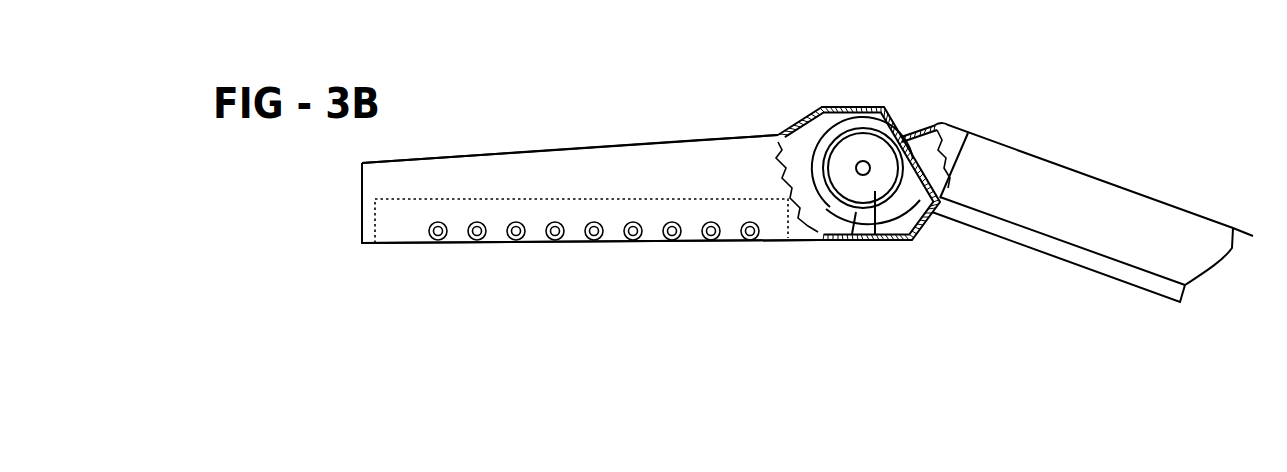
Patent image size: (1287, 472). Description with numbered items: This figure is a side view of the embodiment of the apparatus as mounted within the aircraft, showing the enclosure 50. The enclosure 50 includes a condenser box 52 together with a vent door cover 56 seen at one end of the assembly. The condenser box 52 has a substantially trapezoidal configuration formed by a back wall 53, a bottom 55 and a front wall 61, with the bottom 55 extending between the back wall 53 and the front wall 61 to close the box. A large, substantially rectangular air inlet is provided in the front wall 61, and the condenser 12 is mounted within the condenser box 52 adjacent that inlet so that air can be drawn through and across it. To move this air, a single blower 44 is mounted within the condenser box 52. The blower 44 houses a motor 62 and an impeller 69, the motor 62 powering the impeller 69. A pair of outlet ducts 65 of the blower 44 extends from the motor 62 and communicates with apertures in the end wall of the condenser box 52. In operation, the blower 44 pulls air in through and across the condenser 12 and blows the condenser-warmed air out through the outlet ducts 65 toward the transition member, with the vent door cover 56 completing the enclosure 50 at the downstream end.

The condenser 12 is at (585, 208).
The blower 44 is at (853, 236).
The enclosure 50 is at (580, 260).
The condenser box 52 is at (545, 150).
The back wall 53 is at (718, 138).
The bottom 55 is at (360, 230).
The vent door cover 56 is at (1082, 265).
The front wall 61 is at (412, 245).
The motor 62 is at (878, 238).
The outlet ducts 65 is at (933, 212).
The impeller 69 is at (840, 208).